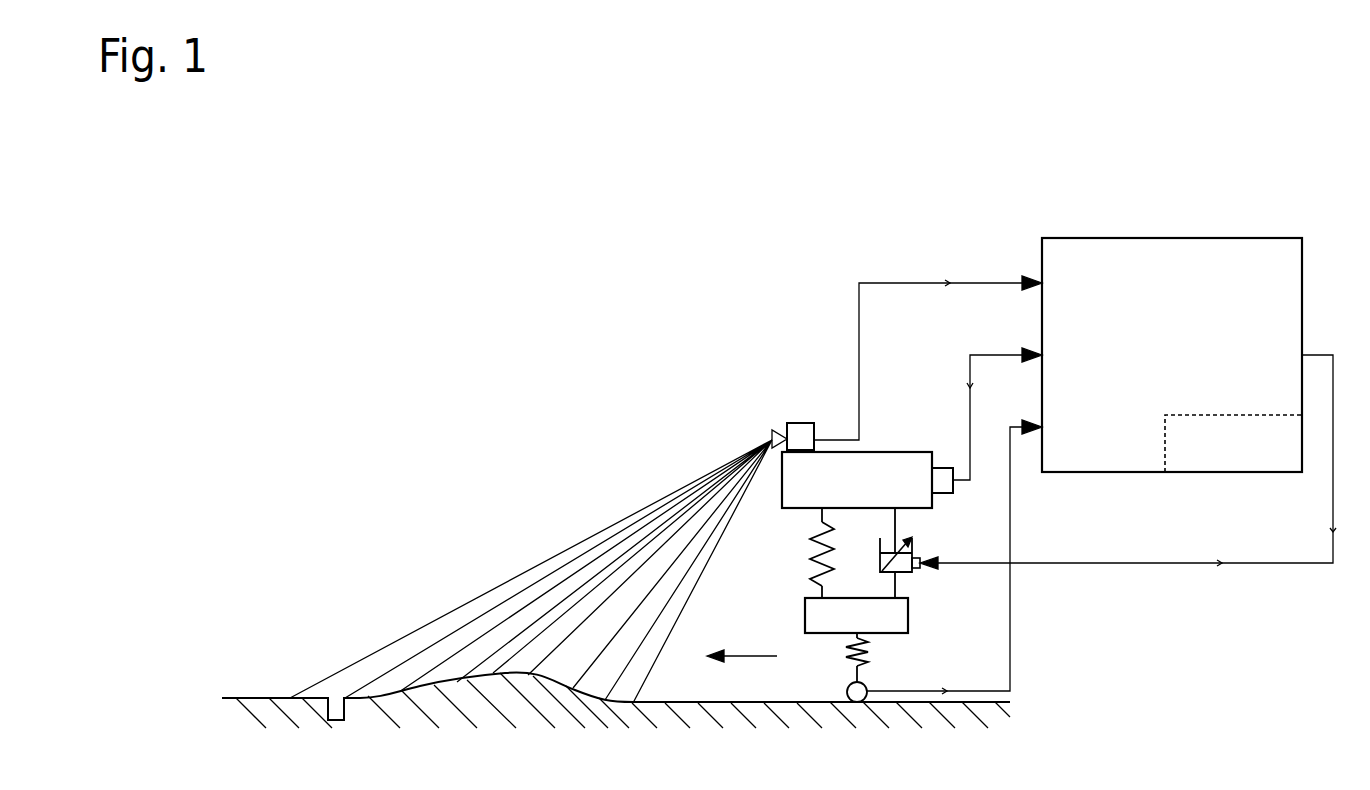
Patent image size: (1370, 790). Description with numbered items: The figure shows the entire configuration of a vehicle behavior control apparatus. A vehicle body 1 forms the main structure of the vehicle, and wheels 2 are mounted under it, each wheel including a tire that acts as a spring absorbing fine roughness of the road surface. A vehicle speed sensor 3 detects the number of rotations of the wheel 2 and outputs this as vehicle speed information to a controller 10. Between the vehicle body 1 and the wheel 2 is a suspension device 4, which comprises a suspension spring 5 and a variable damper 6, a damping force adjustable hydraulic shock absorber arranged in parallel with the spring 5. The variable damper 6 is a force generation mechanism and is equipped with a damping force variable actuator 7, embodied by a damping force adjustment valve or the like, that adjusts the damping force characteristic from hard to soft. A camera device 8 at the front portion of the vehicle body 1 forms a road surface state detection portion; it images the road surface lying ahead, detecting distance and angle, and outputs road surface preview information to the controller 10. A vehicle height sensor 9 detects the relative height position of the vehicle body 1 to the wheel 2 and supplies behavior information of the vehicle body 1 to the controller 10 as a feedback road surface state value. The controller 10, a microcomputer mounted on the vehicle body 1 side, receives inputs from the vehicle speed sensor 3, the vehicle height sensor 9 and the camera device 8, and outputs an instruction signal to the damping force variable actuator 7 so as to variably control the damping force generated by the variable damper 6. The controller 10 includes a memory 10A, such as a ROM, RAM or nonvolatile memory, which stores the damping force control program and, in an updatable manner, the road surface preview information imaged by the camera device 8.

The vehicle body 1 is at (873, 452).
The wheels 2 is at (805, 617).
The vehicle speed sensor 3 is at (848, 685).
The suspension device 4 is at (801, 553).
The suspension spring 5 is at (856, 557).
The variable damper 6 is at (913, 540).
The damping force variable actuator 7 is at (917, 570).
The camera device 8 is at (797, 422).
The vehicle height sensor 9 is at (940, 467).
The controller 10 is at (1172, 357).
The memory 10A is at (1233, 472).